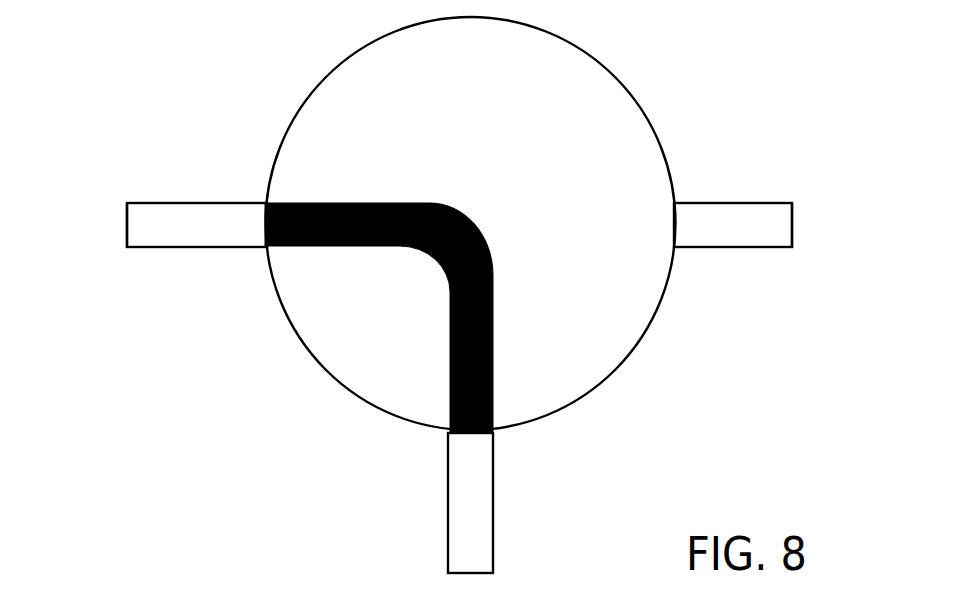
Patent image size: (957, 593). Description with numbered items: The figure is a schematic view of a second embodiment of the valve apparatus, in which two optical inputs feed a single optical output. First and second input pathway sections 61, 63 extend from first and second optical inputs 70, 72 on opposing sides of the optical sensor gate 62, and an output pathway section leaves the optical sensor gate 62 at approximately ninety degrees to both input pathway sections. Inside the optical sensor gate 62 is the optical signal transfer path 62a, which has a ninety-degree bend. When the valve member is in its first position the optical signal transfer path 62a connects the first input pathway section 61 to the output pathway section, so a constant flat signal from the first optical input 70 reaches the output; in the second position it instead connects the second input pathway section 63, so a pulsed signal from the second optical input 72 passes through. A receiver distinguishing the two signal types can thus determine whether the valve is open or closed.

The first input pathway section 61 is at (183, 210).
The optical sensor gate 62 is at (578, 125).
The optical signal transfer path 62a is at (399, 200).
The second input pathway section 63 is at (729, 218).
The first optical input 70 is at (127, 226).
The second optical input 72 is at (793, 225).